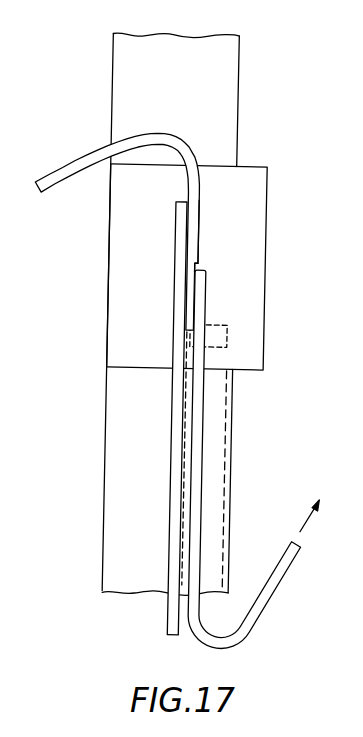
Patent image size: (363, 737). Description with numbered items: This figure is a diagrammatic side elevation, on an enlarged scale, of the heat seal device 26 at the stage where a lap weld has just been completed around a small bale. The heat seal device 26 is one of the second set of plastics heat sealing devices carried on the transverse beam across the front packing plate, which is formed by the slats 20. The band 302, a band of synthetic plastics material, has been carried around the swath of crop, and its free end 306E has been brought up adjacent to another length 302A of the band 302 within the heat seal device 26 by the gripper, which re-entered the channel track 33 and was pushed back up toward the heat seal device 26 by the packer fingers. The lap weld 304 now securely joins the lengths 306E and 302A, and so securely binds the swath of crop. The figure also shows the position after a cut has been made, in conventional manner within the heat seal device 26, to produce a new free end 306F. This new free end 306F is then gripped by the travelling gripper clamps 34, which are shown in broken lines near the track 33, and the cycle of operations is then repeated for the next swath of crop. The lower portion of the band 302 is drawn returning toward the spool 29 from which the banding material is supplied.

The slats 20 is at (207, 67).
The heat seal device 26 is at (268, 222).
The track 33 is at (236, 404).
The travelling gripper clamps 34 is at (224, 330).
The band 302 is at (53, 170).
The length of the band 302A is at (196, 251).
The lap weld 304 is at (200, 229).
The free end of the band 306E is at (176, 234).
The new free end 306F is at (198, 300).
The spool 29 is at (288, 499).